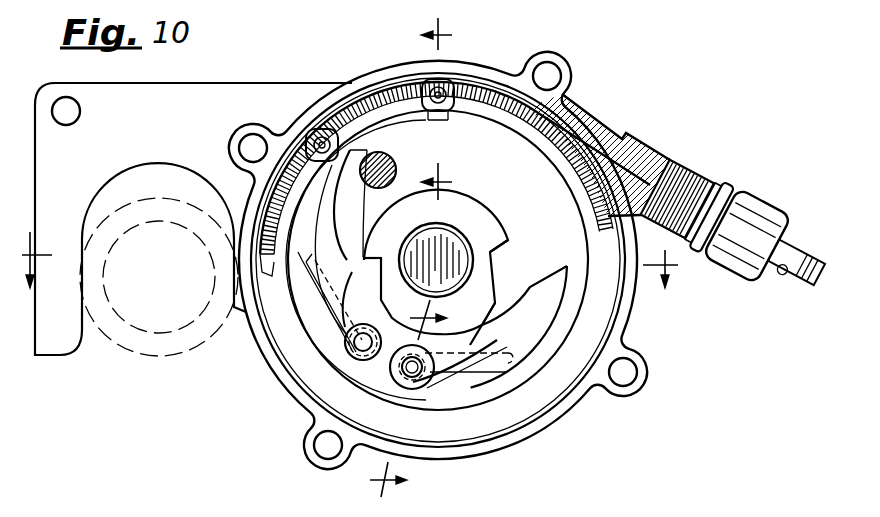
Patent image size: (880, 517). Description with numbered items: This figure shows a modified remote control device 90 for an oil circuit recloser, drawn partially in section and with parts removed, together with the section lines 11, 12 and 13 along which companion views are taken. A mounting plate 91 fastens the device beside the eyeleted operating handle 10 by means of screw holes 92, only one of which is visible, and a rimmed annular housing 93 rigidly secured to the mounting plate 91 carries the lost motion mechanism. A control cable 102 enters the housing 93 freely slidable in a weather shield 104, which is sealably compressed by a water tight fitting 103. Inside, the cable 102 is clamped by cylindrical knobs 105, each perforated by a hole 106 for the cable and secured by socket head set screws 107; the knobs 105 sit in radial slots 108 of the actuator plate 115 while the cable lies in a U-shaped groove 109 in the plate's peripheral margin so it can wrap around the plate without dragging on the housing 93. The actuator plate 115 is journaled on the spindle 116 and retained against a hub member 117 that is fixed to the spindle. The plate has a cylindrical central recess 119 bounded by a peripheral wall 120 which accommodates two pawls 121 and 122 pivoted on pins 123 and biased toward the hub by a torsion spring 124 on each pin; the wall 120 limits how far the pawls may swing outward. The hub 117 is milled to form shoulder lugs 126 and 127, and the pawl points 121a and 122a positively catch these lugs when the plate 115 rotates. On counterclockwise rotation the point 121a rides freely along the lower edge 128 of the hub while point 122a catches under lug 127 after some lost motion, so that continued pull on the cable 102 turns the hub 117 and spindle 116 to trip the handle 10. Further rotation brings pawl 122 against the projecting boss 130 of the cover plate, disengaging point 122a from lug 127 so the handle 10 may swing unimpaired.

The eyeleted operating handle 10 is at (123, 352).
The section line 11- 11 is at (350, 260).
The section line 12- 12 is at (447, 109).
The section line 13- 13 is at (402, 398).
The remote control device 90 is at (577, 99).
The mounting plate 91 is at (207, 108).
The screw holes 92 is at (58, 100).
The rimmed annular housing 93 is at (551, 415).
The control cable 102 is at (617, 133).
The water tight fitting 103 is at (758, 217).
The weather shield 104 is at (670, 160).
The cylindrical knobs 105 is at (327, 113).
The hole 106 is at (465, 76).
The socket head set screws 107 is at (318, 143).
The radial slots 108 is at (447, 112).
The U-shaped groove 109 is at (567, 163).
The actuator plate 115 is at (556, 370).
The spindle 116 is at (434, 248).
The hub member 117 is at (473, 205).
The cylindrical central recess 119 is at (605, 297).
The peripheral wall 120 is at (617, 312).
The pawl 121 is at (364, 168).
The point of pawl 121a is at (367, 260).
The pawl 122 is at (583, 267).
The point of pawl 122a is at (478, 360).
The pins 123 is at (363, 360).
The torsion spring 124 is at (322, 299).
The shoulder lug 126 is at (367, 258).
The shoulder lug 127 is at (498, 246).
The lower edge of hub 128 is at (441, 331).
The projecting boss 130 is at (387, 162).